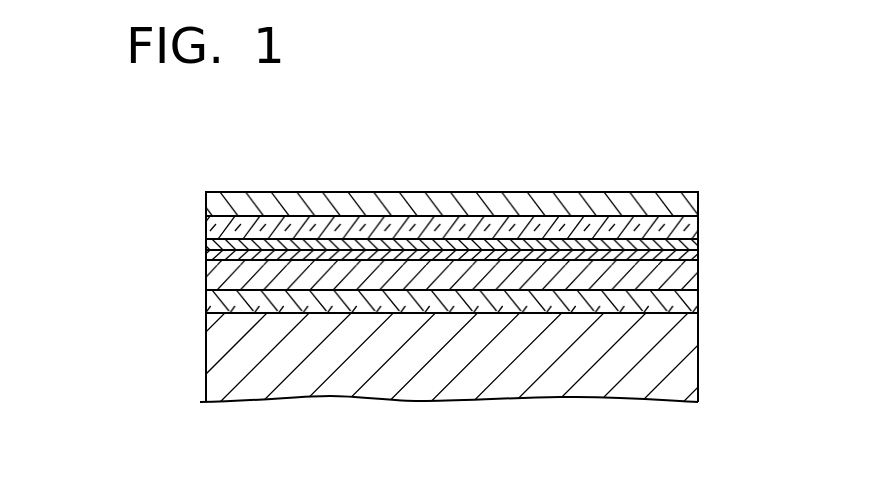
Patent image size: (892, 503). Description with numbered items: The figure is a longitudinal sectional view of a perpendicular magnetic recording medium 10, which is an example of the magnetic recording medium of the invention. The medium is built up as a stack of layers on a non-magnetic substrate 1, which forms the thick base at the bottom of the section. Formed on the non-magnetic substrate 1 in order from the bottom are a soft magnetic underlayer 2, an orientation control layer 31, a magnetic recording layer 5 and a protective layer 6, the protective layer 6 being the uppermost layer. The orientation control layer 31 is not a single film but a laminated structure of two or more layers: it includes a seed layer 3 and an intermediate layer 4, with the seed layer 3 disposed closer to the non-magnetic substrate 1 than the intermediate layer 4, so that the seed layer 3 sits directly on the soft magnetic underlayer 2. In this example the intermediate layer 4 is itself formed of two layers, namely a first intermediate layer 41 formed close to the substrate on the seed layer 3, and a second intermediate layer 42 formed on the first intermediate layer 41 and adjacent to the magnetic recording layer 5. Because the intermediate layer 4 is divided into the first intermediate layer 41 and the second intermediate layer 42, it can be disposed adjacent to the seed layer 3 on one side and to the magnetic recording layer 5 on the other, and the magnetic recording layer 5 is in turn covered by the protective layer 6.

The perpendicular magnetic recording medium 10 is at (478, 166).
The non-magnetic substrate 1 is at (688, 378).
The soft magnetic underlayer 2 is at (692, 303).
The seed layer 3 is at (207, 277).
The orientation control layer 31 is at (83, 223).
The intermediate layer 4 is at (120, 207).
The first intermediate layer 41 is at (207, 256).
The second intermediate layer 42 is at (207, 245).
The magnetic recording layer 5 is at (692, 228).
The protective layer 6 is at (683, 206).